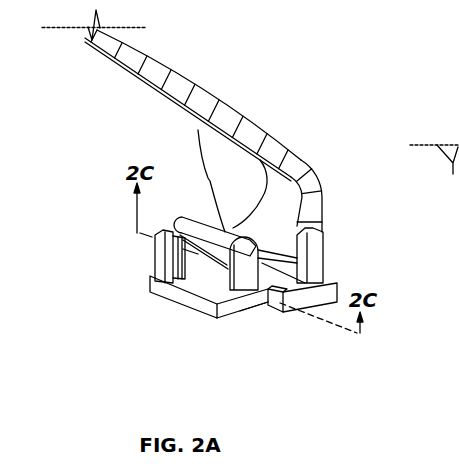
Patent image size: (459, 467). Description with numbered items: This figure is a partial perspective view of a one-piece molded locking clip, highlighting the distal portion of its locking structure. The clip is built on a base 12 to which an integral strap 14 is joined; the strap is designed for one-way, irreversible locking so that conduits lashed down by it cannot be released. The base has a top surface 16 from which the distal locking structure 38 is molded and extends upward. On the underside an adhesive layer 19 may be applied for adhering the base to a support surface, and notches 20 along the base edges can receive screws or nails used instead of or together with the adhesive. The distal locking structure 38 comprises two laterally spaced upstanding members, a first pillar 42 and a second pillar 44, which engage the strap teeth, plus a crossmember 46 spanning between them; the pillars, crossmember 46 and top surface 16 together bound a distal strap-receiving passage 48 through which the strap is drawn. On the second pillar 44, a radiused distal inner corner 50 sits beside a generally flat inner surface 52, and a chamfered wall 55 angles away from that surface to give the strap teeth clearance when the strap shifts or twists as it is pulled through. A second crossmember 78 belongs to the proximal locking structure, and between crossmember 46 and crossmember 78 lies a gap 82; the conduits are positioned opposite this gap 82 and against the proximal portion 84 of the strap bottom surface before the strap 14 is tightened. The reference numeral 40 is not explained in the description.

The base 12 is at (293, 274).
The strap 14 is at (250, 124).
The top surface 16 is at (215, 281).
The adhesive layer 19 is at (261, 314).
The notches 20 is at (279, 320).
The distal locking structure 38 is at (100, 228).
The mount 40 is at (340, 267).
The first pillar 42 is at (238, 259).
The second pillar 44 is at (154, 254).
The crossmember 46 is at (203, 220).
The distal strap-receiving passage 48 is at (211, 274).
The distal inner corner 50 is at (182, 267).
The flat inner surface 52 is at (180, 276).
The chamfered wall 55 is at (187, 275).
The crossmember 78 is at (307, 194).
The gap 82 is at (262, 231).
The proximal portion 84 is at (208, 179).